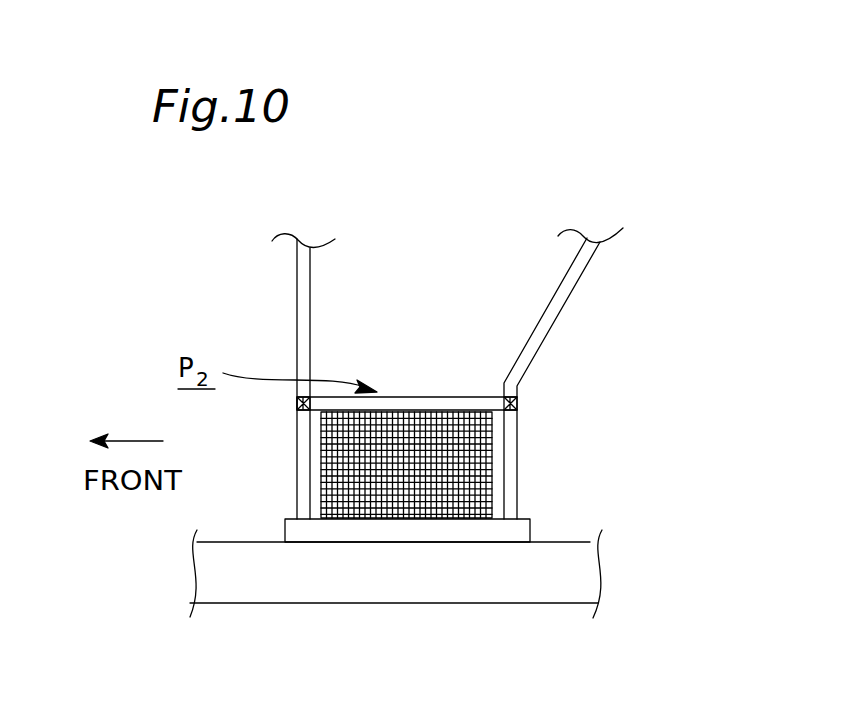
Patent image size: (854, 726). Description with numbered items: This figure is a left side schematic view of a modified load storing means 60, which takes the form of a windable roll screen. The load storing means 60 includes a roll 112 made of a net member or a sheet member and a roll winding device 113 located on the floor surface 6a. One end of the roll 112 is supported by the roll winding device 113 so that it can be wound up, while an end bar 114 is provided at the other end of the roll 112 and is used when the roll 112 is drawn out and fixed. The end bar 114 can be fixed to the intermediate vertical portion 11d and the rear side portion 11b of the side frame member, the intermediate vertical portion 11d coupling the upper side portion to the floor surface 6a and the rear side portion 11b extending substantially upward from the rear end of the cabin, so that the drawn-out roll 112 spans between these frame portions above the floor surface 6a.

The load storing means 60 is at (391, 352).
The intermediate vertical portion 11d is at (297, 312).
The rear side portion 11b is at (563, 295).
The end bar 114 is at (456, 406).
The roll 112 is at (455, 462).
The roll winding device 113 is at (417, 530).
The floor surface 6a is at (323, 543).